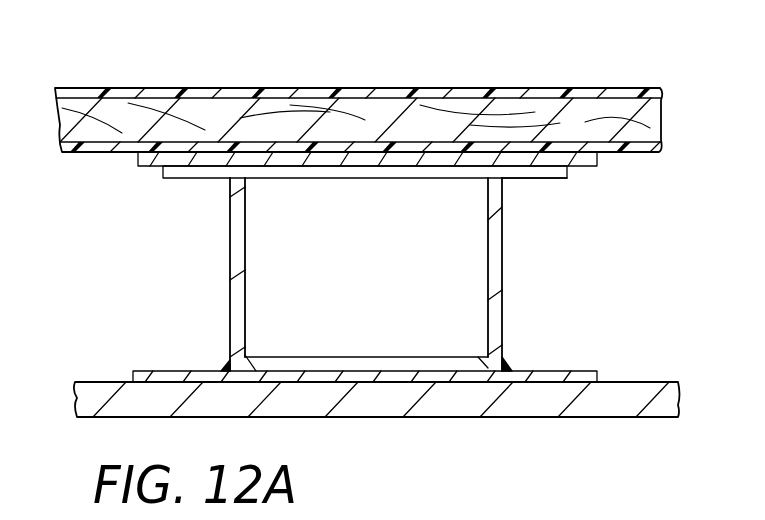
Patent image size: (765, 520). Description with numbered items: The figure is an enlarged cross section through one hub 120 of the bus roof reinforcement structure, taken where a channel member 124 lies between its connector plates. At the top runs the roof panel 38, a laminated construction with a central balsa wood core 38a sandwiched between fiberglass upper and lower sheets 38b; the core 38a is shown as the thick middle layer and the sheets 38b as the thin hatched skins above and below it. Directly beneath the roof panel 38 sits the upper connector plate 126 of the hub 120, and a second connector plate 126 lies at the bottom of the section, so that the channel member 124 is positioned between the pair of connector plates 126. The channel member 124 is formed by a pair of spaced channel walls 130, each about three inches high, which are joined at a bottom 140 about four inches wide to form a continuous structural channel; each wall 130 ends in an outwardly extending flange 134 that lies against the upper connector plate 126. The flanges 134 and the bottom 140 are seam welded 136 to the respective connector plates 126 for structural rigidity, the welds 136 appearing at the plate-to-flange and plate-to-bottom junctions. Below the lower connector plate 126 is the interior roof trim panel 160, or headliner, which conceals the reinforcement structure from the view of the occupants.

The roof panel 38 is at (366, 110).
The central balsa wood core 38a is at (112, 105).
The fiberglass upper and lower sheets 38b is at (353, 93).
The hub 120 is at (316, 268).
The channel member 124 is at (170, 274).
The connector plate 126 is at (150, 167).
The channel wall 130 is at (298, 274).
The flange 134 is at (528, 178).
The seam weld 136 is at (168, 172).
The bottom 140 is at (355, 356).
The interior roof trim panel 160 is at (477, 418).